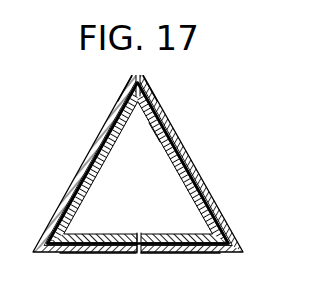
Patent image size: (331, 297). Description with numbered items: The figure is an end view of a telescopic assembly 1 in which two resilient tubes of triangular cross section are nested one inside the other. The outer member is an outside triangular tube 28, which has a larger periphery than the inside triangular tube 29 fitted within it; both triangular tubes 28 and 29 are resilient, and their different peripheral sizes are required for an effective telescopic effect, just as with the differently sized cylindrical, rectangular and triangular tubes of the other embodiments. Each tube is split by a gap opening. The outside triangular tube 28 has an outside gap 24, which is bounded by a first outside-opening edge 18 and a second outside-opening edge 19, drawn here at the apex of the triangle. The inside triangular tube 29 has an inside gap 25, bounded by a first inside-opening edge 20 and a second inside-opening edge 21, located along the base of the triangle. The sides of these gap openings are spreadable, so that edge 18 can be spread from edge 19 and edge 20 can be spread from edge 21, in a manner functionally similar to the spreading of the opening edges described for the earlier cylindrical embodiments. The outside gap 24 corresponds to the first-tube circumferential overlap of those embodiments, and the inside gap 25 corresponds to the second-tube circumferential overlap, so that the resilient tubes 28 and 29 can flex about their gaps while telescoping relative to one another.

The telescopic assembly 1 is at (50, 141).
The first outside-opening edge 18 is at (134, 82).
The second outside-opening edge 19 is at (143, 82).
The first inside-opening edge 20 is at (136, 251).
The second inside-opening edge 21 is at (142, 252).
The outside gap 24 is at (149, 123).
The inside gap 25 is at (138, 234).
The outside triangular tube 28 is at (174, 134).
The inside triangular tube 29 is at (197, 169).